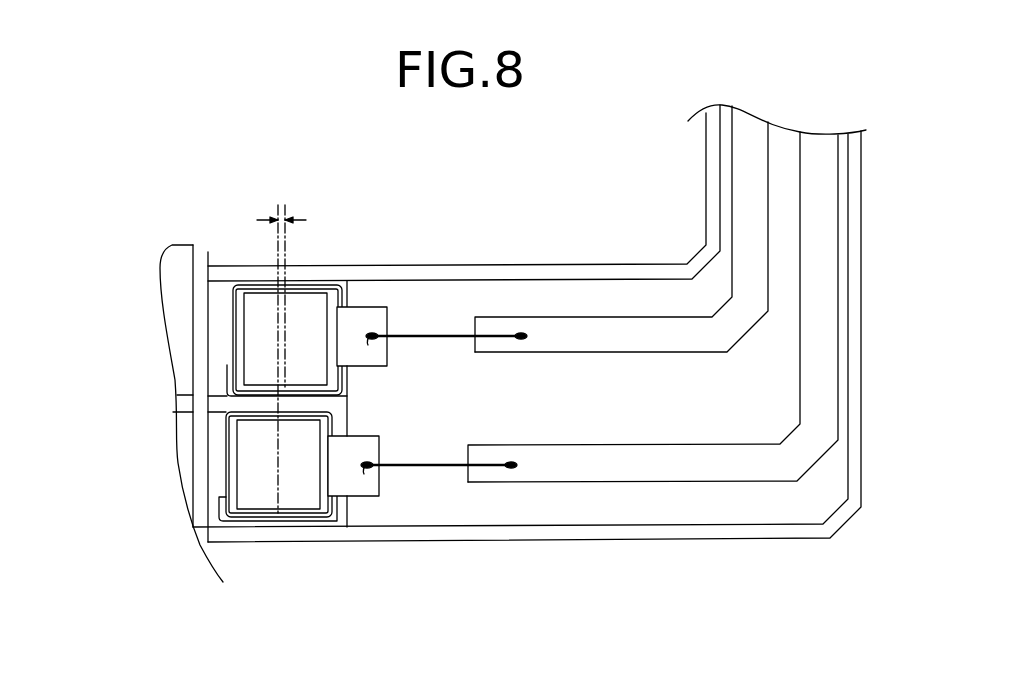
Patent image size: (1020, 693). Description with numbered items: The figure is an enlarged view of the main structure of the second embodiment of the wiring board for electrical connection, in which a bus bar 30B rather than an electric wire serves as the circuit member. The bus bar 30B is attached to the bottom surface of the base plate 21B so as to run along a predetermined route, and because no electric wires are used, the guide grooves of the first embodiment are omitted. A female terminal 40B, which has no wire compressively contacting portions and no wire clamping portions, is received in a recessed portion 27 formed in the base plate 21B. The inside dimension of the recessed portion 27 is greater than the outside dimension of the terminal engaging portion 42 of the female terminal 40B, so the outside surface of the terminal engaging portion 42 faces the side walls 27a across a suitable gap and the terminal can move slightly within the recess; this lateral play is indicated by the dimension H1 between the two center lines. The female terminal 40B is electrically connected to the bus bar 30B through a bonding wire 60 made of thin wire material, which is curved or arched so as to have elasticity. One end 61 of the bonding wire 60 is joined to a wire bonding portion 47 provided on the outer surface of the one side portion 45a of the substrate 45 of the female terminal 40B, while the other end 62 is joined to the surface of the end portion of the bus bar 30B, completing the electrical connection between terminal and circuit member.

The base plate 21B is at (740, 539).
The recessed portion 27 is at (217, 363).
The side walls 27a is at (213, 335).
The bus bar 30B is at (603, 327).
The female terminal 40B is at (310, 309).
The terminal engaging portion 42 is at (263, 308).
The substrate 45 is at (367, 367).
The one side portion 45a is at (372, 318).
The wire bonding portion 47 is at (375, 338).
The bonding wire 60 is at (463, 332).
The one end of the bonding wire 61 is at (378, 345).
The other end of the bonding wire 62 is at (521, 340).
The offset dimension H1 is at (297, 347).